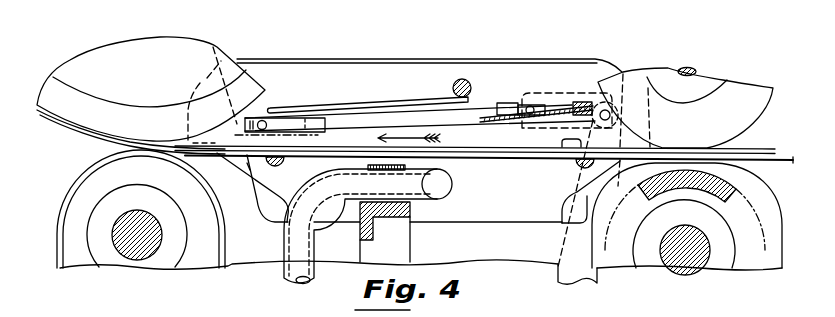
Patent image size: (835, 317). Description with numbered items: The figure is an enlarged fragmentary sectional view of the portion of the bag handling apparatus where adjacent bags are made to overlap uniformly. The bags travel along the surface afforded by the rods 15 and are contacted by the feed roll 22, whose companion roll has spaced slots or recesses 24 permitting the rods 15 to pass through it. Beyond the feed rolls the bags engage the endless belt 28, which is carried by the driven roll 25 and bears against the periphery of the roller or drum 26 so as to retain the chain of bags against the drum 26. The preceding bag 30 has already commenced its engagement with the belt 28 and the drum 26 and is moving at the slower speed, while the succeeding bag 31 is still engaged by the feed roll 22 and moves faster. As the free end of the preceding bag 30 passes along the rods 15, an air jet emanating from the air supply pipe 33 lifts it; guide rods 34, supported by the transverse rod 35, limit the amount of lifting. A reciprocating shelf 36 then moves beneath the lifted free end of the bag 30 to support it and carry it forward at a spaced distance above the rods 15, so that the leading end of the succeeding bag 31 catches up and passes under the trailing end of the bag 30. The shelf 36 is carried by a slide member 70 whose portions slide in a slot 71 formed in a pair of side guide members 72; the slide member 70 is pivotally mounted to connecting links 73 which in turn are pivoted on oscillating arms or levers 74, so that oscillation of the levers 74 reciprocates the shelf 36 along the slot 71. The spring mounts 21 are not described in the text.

The rods 15 is at (466, 154).
The spring mounts 21 is at (285, 166).
The feed roll 22 is at (752, 87).
The spaced slots or recesses 24 is at (778, 233).
The driven roll 25 is at (63, 212).
The roller or drum 26 is at (103, 53).
The endless belt 28 is at (80, 136).
The preceding bag 30 is at (337, 142).
The succeeding bag 31 is at (578, 128).
The air supply pipe 33 is at (440, 203).
The guide rods 34 is at (366, 106).
The transverse rod 35 is at (454, 84).
The reciprocating shelf 36 is at (505, 102).
The slide member 70 is at (578, 101).
The slot 71 is at (449, 116).
The side guide members 72 is at (443, 58).
The connecting links 73 is at (542, 92).
The oscillating arms or levers 74 is at (557, 276).